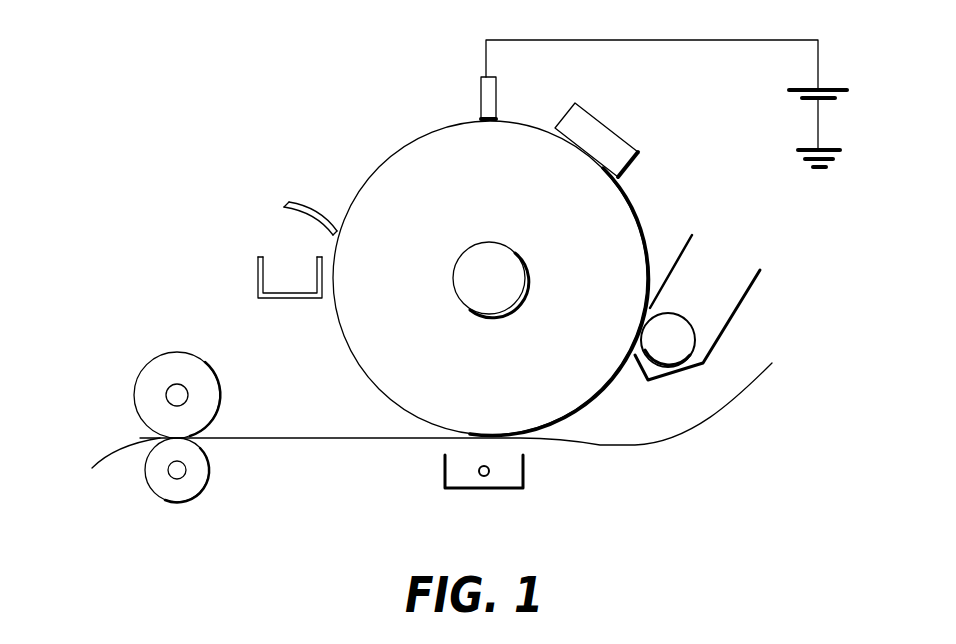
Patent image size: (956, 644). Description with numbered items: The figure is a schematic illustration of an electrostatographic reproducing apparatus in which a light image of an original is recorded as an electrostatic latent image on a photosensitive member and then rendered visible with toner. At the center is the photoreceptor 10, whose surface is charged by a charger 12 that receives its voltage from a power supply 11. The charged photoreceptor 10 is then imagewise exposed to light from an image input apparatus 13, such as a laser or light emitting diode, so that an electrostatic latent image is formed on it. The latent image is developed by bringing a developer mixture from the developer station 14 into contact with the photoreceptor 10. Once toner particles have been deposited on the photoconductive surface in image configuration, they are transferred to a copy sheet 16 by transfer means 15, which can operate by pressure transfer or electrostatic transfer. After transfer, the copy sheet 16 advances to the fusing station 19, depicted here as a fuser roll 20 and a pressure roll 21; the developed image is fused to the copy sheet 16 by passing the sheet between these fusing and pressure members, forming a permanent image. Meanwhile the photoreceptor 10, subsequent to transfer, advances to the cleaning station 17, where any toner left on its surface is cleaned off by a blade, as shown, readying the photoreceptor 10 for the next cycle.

The photoreceptor 10 is at (634, 212).
The power supply 11 is at (818, 77).
The charger 12 is at (483, 110).
The image input apparatus 13 is at (612, 131).
The developer station 14 is at (710, 276).
The transfer means 15 is at (527, 467).
The copy sheet 16 is at (717, 399).
The cleaning station 17 is at (270, 222).
The fusing station 19 is at (100, 421).
The fuser roll 20 is at (215, 383).
The pressure roll 21 is at (200, 472).